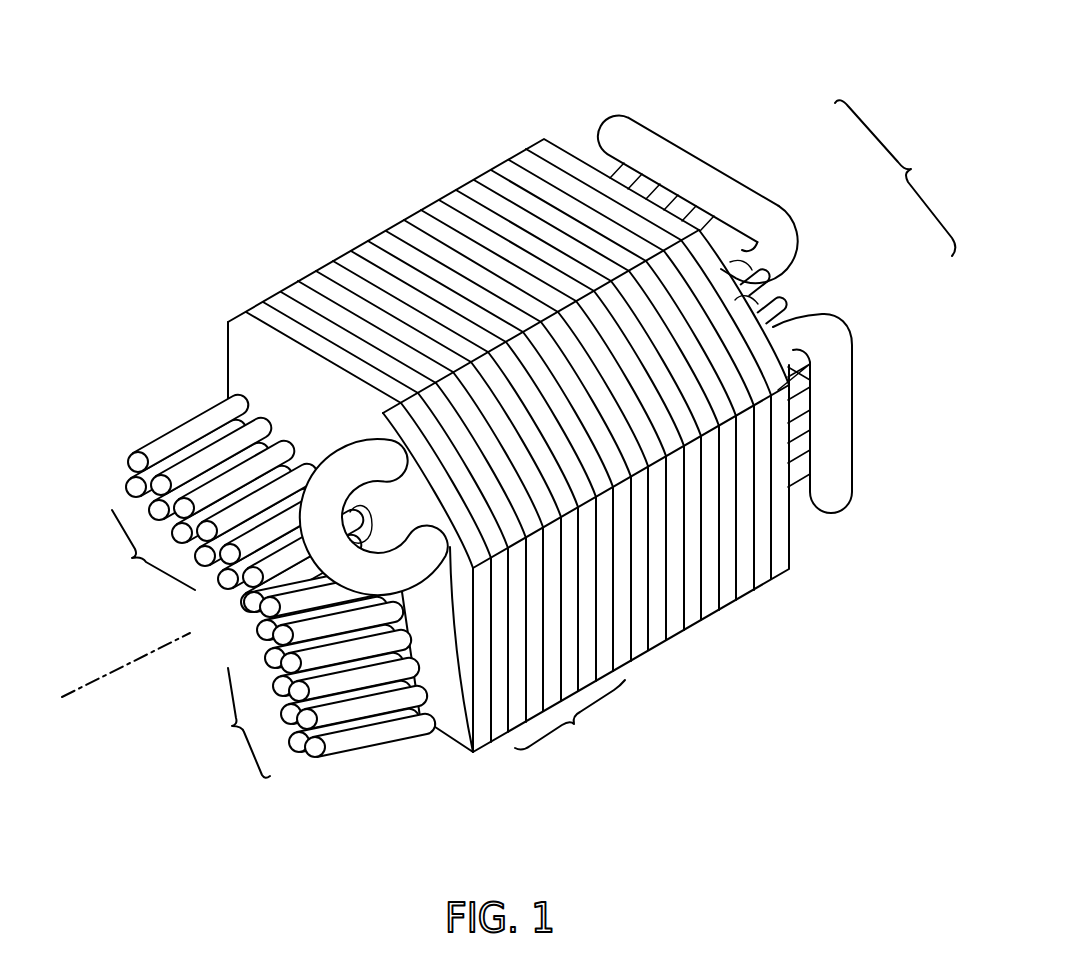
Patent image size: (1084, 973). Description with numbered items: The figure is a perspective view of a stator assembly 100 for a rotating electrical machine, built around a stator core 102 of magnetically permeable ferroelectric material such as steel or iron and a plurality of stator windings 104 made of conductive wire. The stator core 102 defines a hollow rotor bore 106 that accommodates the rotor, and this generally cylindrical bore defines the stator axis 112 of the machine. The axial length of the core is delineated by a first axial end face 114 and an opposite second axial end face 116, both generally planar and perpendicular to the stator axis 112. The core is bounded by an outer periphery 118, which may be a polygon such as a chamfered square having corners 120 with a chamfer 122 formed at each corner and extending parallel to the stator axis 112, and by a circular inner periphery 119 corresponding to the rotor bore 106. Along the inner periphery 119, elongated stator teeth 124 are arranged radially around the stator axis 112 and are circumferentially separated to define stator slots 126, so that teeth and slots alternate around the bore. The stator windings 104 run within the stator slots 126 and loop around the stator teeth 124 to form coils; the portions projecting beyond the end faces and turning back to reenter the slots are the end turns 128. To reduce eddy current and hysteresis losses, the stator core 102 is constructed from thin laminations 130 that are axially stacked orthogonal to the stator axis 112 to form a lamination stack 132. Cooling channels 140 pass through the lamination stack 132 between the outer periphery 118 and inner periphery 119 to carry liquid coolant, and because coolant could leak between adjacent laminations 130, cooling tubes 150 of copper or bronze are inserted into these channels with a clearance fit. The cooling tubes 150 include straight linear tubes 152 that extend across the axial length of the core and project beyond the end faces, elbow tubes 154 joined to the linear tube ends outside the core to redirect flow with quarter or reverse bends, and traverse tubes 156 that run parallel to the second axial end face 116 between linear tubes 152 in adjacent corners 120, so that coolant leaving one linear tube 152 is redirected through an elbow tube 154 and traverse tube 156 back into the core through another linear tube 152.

The stator assembly 100 is at (416, 82).
The stator core 102 is at (579, 445).
The lamination stack 132 is at (438, 190).
The stator windings 104 is at (187, 644).
The rotor bore 106 is at (118, 697).
The stator axis 112 is at (88, 683).
The first axial end face 114 is at (248, 367).
The second axial end face 116 is at (572, 126).
The outer periphery 118 is at (378, 247).
The inner periphery 119 is at (411, 722).
The corners 120 is at (802, 366).
The chamfer 122 is at (755, 245).
The stator teeth 124 is at (230, 477).
The stator slots 126 is at (795, 276).
The end turns 128 is at (183, 503).
The laminations 130 is at (570, 726).
The cooling channels 140 is at (473, 575).
The cooling tubes 150 is at (895, 178).
The linear tubes 152 is at (753, 282).
The elbow tubes 154 is at (740, 273).
The traverse tubes 156 is at (687, 167).